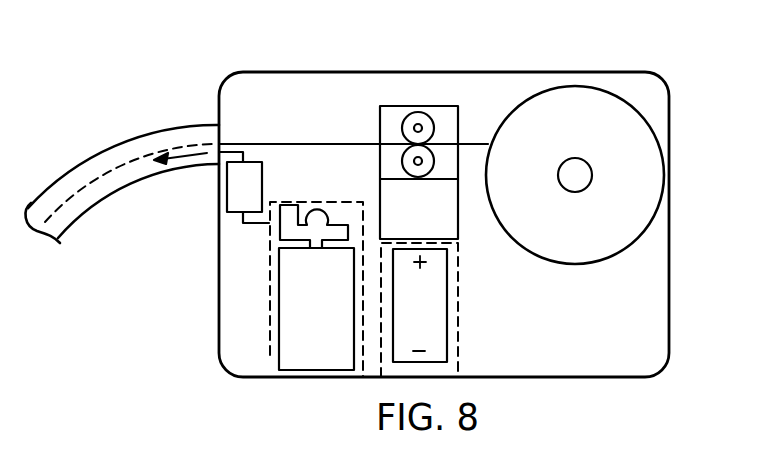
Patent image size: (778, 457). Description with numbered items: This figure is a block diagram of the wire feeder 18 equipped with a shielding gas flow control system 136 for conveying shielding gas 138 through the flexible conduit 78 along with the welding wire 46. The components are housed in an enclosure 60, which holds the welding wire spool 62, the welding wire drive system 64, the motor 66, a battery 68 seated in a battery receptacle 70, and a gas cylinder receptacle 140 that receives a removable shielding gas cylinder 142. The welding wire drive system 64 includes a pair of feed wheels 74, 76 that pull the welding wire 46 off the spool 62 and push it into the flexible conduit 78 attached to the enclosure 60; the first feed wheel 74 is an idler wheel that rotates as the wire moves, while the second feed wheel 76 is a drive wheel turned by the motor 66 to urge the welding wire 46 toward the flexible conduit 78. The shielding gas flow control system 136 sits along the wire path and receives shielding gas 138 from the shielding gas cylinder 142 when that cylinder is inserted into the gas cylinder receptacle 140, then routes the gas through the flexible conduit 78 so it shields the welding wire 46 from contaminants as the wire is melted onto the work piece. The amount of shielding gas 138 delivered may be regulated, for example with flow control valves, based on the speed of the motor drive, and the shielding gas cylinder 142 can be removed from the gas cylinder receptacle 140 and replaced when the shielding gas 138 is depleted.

The wire feeder 18 is at (171, 90).
The flexible conduit 78 is at (132, 180).
The shielding gas 138 is at (188, 160).
The welding wire 46 is at (307, 143).
The shielding gas flow control system 136 is at (262, 184).
The welding wire drive system 64 is at (418, 106).
The first feed wheel 74 is at (436, 127).
The second feed wheel 76 is at (436, 161).
The motor 66 is at (432, 224).
The enclosure 60 is at (648, 122).
The welding wire spool 62 is at (588, 247).
The shielding gas cylinder 142 is at (336, 327).
The gas cylinder receptacle 140 is at (270, 355).
The battery 68 is at (447, 305).
The battery receptacle 70 is at (458, 348).